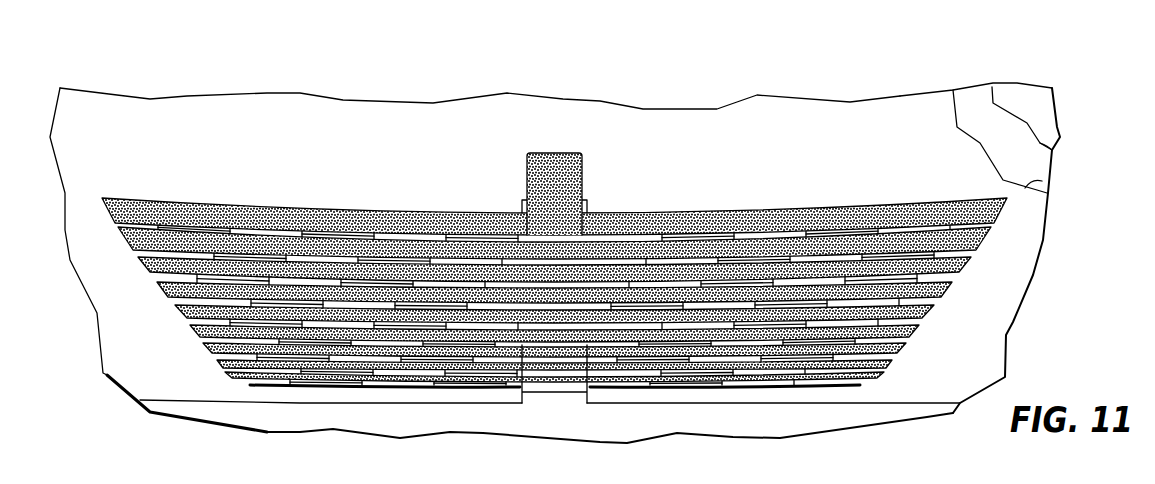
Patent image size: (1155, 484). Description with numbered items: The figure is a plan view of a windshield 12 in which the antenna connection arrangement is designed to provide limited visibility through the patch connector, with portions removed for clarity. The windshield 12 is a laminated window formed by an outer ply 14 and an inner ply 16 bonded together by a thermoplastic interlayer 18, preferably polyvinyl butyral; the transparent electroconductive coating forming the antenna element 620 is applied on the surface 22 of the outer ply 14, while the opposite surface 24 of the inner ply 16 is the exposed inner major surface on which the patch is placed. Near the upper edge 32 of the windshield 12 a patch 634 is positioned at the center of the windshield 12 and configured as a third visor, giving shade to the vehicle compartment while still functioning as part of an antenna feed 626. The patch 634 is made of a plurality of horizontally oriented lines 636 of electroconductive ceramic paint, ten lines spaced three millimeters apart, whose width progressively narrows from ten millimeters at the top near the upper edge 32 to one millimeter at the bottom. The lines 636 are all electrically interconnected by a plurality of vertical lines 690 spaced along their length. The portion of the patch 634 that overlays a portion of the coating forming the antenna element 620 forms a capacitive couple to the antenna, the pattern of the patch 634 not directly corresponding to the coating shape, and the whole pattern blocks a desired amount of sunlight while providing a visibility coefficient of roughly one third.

The windshield 12 is at (65, 230).
The upper edge 32 is at (267, 93).
The surface 24 is at (904, 120).
The outer ply 14 is at (1060, 123).
The surface 22 is at (1032, 93).
The thermoplastic interlayer 18 is at (1047, 143).
The inner ply 16 is at (1040, 181).
The patch 634 is at (752, 210).
The antenna feed 626 is at (482, 177).
The horizontally oriented lines 636 is at (215, 362).
The vertical lines 690 is at (870, 321).
The antenna element 620 is at (170, 399).